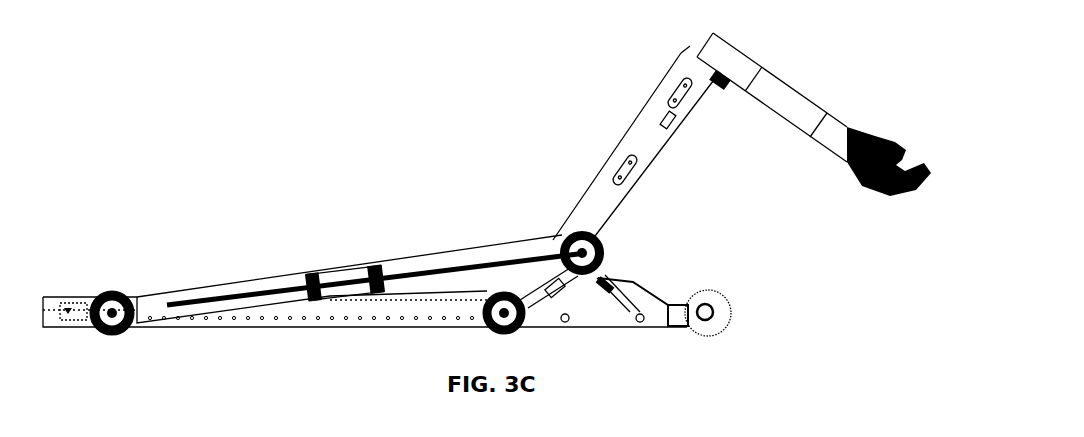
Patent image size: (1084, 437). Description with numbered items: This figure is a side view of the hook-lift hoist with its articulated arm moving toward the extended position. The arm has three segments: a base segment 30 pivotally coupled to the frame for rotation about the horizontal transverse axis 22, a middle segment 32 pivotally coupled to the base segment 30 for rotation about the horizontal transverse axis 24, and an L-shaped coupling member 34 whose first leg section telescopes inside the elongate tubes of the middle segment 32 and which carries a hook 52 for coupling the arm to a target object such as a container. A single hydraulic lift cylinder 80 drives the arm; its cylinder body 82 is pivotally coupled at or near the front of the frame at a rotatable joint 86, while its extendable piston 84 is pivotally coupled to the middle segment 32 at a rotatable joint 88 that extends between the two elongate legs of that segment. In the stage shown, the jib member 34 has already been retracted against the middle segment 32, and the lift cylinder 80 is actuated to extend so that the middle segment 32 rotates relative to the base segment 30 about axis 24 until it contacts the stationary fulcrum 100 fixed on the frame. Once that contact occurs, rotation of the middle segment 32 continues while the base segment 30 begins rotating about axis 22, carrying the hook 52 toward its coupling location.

The horizontal axis 22 is at (717, 316).
The horizontal axis 24 is at (518, 331).
The base segment 30 is at (652, 307).
The middle segment 32 is at (628, 138).
The coupling member 34 is at (790, 98).
The hook 52 is at (890, 195).
The hydraulic lift cylinder 80 is at (320, 260).
The cylinder body 82 is at (230, 287).
The extendable piston 84 is at (477, 262).
The rotatable joint 86 is at (107, 334).
The rotatable joint 88 is at (604, 252).
The stationary fulcrum 100 is at (587, 287).